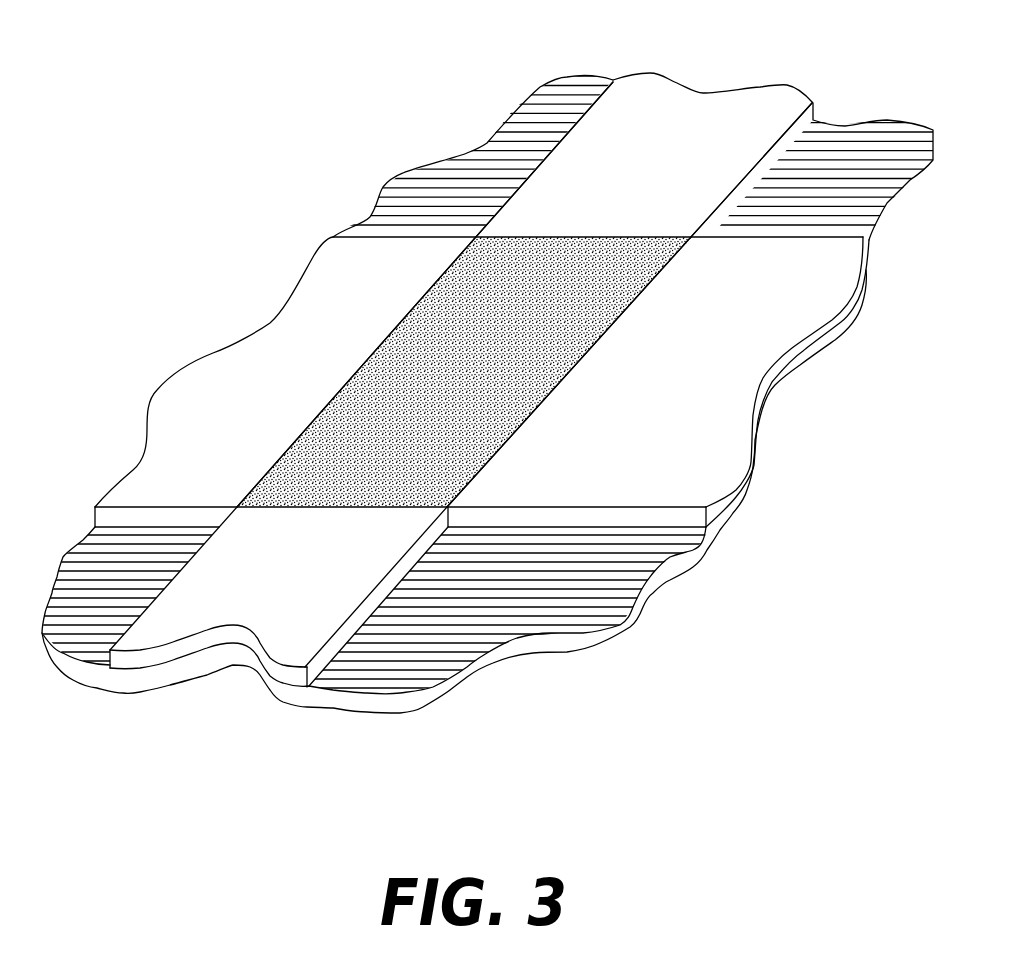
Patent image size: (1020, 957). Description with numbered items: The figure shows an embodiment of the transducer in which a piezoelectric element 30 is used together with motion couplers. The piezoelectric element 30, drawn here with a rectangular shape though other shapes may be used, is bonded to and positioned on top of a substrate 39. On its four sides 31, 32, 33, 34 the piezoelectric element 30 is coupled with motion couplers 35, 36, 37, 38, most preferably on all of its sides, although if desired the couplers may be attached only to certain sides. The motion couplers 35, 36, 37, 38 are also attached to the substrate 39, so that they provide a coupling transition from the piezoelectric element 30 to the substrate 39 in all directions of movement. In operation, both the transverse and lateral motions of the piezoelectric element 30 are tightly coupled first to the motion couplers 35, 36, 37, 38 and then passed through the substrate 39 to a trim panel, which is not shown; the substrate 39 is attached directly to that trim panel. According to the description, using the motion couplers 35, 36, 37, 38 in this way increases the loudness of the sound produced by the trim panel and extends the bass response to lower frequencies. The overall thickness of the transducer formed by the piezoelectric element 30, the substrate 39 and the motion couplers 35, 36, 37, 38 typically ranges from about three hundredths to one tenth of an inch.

The piezoelectric element 30 is at (357, 371).
The side of piezoelectric element 31 is at (311, 422).
The side of piezoelectric element 32 is at (313, 507).
The side of piezoelectric element 33 is at (557, 387).
The side of piezoelectric element 34 is at (538, 237).
The motion coupler 35 is at (223, 478).
The motion coupler 36 is at (312, 610).
The motion coupler 37 is at (688, 377).
The motion coupler 38 is at (670, 200).
The substrate 39 is at (397, 713).